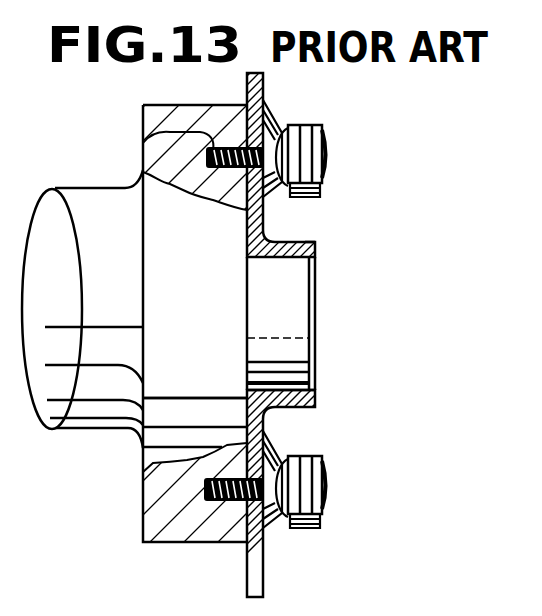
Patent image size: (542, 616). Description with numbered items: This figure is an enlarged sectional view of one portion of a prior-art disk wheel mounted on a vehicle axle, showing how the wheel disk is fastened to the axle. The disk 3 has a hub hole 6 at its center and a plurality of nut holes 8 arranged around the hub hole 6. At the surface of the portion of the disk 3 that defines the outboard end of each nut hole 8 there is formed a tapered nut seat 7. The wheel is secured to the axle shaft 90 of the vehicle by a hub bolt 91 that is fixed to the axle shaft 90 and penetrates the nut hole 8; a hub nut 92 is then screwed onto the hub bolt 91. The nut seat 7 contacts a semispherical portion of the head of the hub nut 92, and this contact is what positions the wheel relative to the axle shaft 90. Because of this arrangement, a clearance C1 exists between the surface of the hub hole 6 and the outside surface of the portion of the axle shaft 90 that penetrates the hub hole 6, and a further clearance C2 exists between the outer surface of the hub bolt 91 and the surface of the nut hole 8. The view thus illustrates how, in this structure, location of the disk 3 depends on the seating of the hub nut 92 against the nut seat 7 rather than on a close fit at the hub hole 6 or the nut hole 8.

The disk 3 is at (247, 83).
The hub hole 6 is at (288, 258).
The nut seat 7 is at (300, 192).
The nut hole 8 is at (283, 185).
The axle shaft 90 is at (233, 327).
The hub bolt 91 is at (213, 150).
The hub nut 92 is at (303, 126).
The clearance C1 is at (316, 254).
The clearance C2 is at (234, 203).